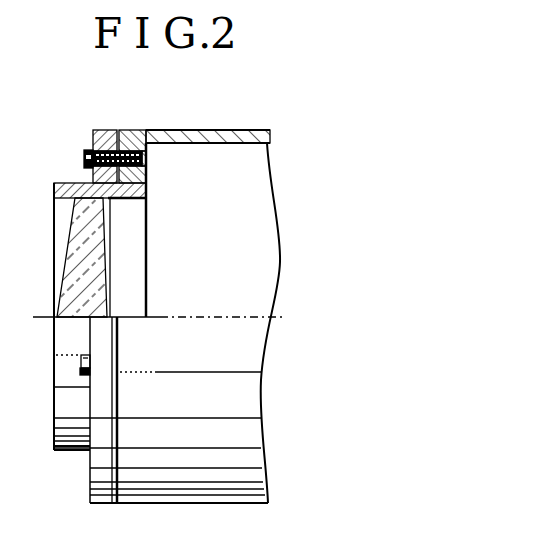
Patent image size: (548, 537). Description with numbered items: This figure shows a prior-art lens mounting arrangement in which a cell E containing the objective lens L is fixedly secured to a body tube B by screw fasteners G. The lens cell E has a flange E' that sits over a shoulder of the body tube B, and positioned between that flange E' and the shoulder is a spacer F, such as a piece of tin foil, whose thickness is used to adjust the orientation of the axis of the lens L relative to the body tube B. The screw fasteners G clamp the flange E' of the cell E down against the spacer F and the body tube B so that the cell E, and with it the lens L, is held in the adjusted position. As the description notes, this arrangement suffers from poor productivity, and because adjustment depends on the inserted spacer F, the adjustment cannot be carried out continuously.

The body tube B is at (149, 128).
The cell E is at (83, 316).
The flange E' is at (108, 131).
The spacer F is at (126, 134).
The screw fasteners G is at (82, 150).
The objective lens L is at (66, 270).